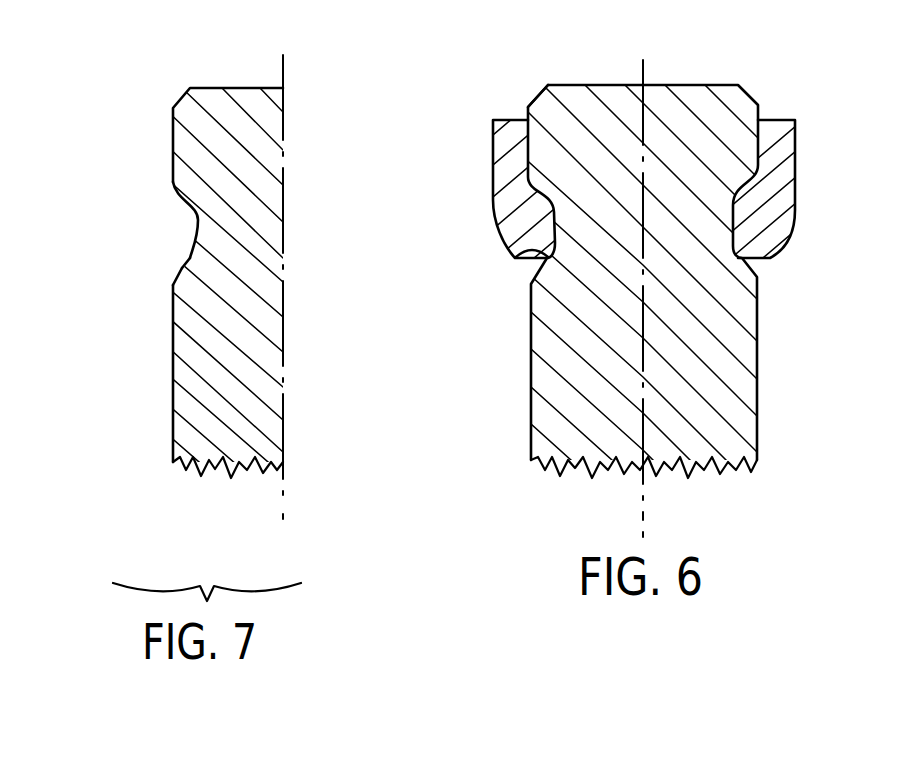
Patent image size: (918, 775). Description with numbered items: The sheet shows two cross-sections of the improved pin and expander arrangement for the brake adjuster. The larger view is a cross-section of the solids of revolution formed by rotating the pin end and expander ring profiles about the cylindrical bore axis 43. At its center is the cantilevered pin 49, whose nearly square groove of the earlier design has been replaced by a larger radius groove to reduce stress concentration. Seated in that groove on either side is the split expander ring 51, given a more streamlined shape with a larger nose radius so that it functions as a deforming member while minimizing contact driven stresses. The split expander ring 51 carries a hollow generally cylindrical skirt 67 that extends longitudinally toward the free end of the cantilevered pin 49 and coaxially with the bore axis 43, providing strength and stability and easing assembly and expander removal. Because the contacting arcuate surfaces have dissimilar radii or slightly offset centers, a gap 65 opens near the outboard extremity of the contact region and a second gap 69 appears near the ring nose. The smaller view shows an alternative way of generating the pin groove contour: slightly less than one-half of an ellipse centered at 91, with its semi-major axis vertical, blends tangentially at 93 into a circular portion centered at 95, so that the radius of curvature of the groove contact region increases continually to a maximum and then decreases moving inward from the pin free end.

In FIG. 6, the cylindrical bore axis 43 is at (643, 505).
In FIG. 6, the cantilevered pin 49 is at (556, 372).
In FIG. 6, the split expander ring 51 is at (772, 230).
In FIG. 6, the gap 65 is at (529, 107).
In FIG. 6, the hollow generally cylindrical skirt 67 is at (499, 151).
In FIG. 6, the gap 69 is at (516, 260).
In FIG. 7, the ellipse center 91 is at (165, 241).
In FIG. 7, the tangential blend point 93 is at (189, 266).
In FIG. 7, the circular portion center 95 is at (183, 253).